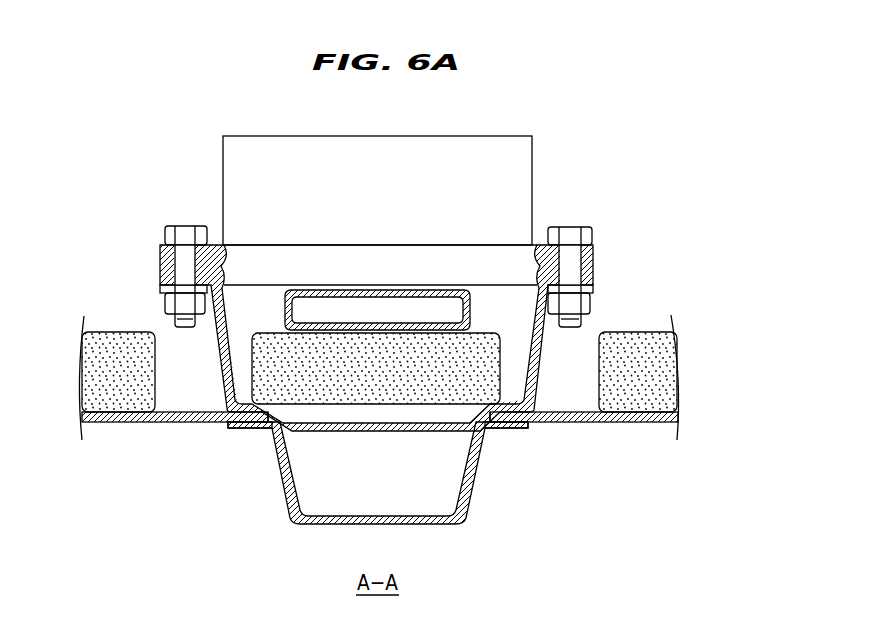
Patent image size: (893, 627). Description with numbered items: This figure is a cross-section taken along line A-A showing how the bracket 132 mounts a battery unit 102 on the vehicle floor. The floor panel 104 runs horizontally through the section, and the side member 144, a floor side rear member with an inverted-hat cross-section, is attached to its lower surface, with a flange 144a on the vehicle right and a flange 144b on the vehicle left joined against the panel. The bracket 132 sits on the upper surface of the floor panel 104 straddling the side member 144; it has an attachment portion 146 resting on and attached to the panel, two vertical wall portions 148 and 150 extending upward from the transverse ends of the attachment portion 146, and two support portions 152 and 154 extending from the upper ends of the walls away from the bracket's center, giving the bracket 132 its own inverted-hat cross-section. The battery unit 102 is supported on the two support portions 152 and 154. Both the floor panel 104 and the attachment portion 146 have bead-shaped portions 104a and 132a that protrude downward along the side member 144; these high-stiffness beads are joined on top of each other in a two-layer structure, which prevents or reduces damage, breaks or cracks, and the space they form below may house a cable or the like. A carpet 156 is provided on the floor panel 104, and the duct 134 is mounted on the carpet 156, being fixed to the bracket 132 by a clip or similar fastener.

The battery unit 102 is at (532, 152).
The floor panel 104 is at (165, 423).
The bead-shaped portion of the floor panel 104a is at (335, 433).
The bracket 132 is at (398, 330).
The bead-shaped portion of the bracket attachment portion 132a is at (412, 414).
The duct 134 is at (475, 285).
The side member 144 is at (390, 480).
The right flange of the side member 144a is at (502, 428).
The left flange of the side member 144b is at (253, 428).
The attachment portion 146 is at (247, 402).
The vertical wall portion 148 is at (226, 386).
The vertical wall portion 150 is at (533, 377).
The support portion 152 is at (160, 292).
The support portion 154 is at (593, 290).
The carpet 156 is at (503, 345).